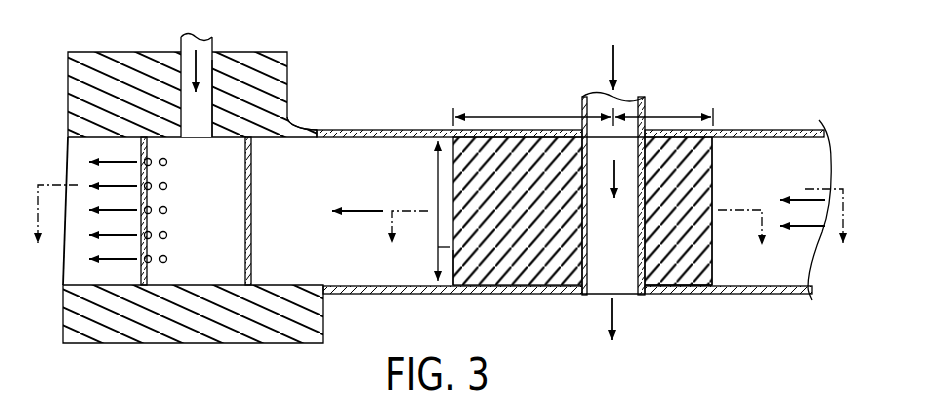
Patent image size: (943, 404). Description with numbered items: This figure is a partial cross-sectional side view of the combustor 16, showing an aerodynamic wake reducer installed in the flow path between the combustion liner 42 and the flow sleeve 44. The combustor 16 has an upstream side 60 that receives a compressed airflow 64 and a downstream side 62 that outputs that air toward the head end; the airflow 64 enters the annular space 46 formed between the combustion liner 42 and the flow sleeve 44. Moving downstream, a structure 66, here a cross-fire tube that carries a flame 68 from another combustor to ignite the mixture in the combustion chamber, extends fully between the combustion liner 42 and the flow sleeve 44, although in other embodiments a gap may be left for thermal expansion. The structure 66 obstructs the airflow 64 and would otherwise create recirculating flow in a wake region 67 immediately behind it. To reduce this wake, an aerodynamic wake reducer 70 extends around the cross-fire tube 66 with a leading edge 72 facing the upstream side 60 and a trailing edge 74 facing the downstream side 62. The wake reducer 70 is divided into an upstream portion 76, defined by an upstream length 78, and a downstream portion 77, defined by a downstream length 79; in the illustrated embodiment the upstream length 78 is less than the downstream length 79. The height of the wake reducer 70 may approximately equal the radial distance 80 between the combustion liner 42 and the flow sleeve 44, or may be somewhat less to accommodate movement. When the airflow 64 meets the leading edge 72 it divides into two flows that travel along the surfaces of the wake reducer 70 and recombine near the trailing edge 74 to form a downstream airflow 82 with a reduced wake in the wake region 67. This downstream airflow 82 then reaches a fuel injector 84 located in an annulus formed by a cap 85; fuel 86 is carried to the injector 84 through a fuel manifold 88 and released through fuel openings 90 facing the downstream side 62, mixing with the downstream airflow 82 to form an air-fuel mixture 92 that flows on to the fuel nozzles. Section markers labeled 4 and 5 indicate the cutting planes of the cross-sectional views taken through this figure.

The combustor 16 is at (784, 77).
The combustion liner 42 is at (330, 293).
The flow sleeve 44 is at (321, 127).
The annular space 46 is at (366, 145).
The upstream side 60 is at (829, 298).
The downstream side 62 is at (50, 300).
The airflow 64 is at (815, 204).
The structure 66 is at (590, 246).
The wake region 67 is at (428, 247).
The flame 68 is at (611, 70).
The aerodynamic wake reducer 70 is at (725, 279).
The leading edge 72 is at (713, 166).
The trailing edge 74 is at (436, 181).
The upstream portion 76 is at (670, 286).
The downstream portion 77 is at (518, 265).
The upstream length 78 is at (672, 116).
The downstream length 79 is at (527, 116).
The radial distance 80 is at (437, 283).
The downstream airflow 82 is at (356, 210).
The fuel injector 84 is at (254, 212).
The cap 85 is at (100, 52).
The fuel 86 is at (182, 73).
The fuel manifold 88 is at (223, 104).
The fuel openings 90 is at (168, 186).
The air-fuel mixture 92 is at (118, 157).
The section line 4 is at (442, 230).
The section line 5 is at (577, 241).